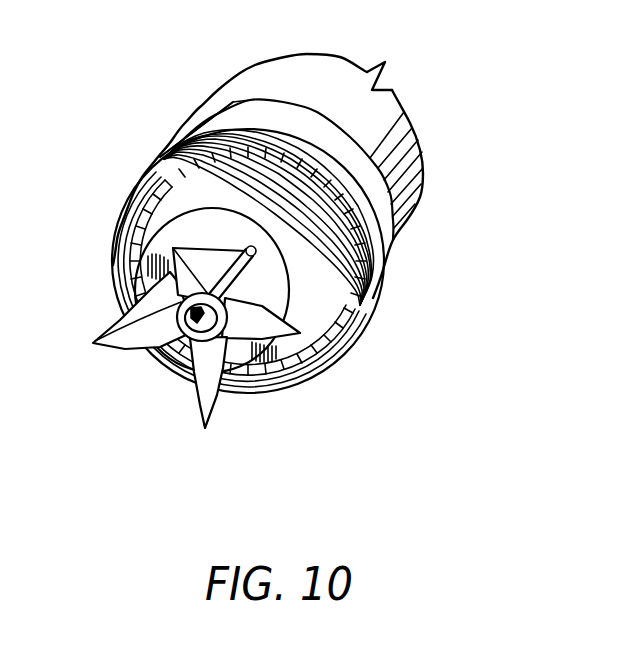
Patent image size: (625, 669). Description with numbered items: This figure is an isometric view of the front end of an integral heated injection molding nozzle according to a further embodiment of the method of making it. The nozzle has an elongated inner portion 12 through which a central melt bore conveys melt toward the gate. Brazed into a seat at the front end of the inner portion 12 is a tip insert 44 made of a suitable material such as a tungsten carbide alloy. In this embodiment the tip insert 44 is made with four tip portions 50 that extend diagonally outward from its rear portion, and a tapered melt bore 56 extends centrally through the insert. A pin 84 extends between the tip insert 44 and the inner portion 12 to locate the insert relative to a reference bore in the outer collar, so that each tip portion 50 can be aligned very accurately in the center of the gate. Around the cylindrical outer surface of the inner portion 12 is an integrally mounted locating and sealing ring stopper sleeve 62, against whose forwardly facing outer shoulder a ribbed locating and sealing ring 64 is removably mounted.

The inner portion 12 is at (387, 112).
The tip insert 44 is at (263, 300).
The tip portion 50 is at (173, 222).
The melt bore 56 is at (160, 278).
The locating and sealing ring stopper sleeve 62 is at (358, 173).
The ribbed locating and sealing ring 64 is at (353, 238).
The pin 84 is at (160, 160).